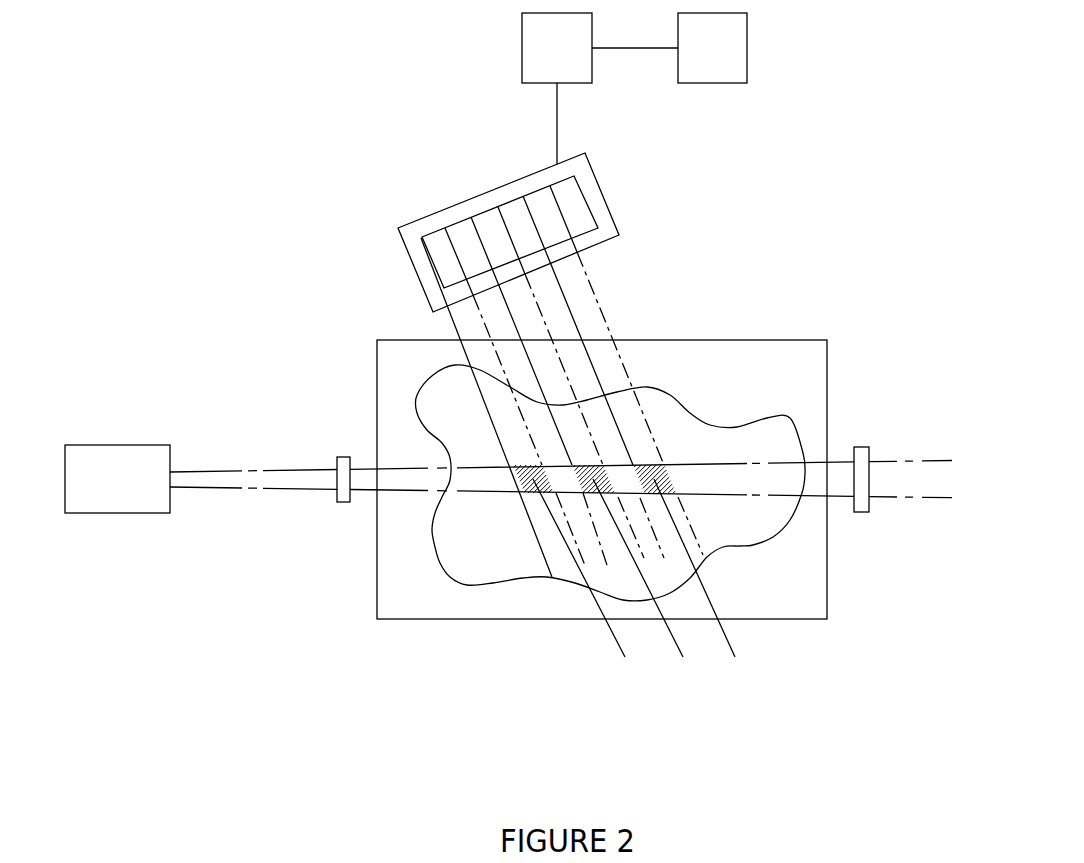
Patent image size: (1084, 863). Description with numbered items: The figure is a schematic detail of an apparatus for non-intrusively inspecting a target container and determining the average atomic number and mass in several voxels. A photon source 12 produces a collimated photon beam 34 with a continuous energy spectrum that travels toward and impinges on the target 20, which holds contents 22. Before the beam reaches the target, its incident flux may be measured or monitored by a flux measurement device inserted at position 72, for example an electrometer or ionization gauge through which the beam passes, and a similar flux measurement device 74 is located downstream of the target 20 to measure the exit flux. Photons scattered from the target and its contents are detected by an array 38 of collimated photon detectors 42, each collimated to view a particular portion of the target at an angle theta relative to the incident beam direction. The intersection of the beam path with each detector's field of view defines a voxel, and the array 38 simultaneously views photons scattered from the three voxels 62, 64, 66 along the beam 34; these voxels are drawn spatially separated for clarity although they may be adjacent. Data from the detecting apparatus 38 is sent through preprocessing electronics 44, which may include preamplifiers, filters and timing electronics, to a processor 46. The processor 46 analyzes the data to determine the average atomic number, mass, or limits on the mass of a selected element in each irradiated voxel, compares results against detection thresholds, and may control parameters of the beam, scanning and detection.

The photon source 12 is at (133, 518).
The target 20 is at (485, 620).
The sample / tissue body 22 is at (465, 424).
The collimated photon beam 34 is at (267, 482).
The array of photon detectors 38 is at (529, 197).
The photon detector 42 is at (545, 217).
The preprocessing electronics 44 is at (573, 61).
The processor 46 is at (727, 61).
The voxel 62 is at (583, 568).
The voxel 64 is at (641, 568).
The voxel 66 is at (697, 568).
The flux measurement device position 72 is at (337, 502).
The flux measurement device 74 is at (868, 512).